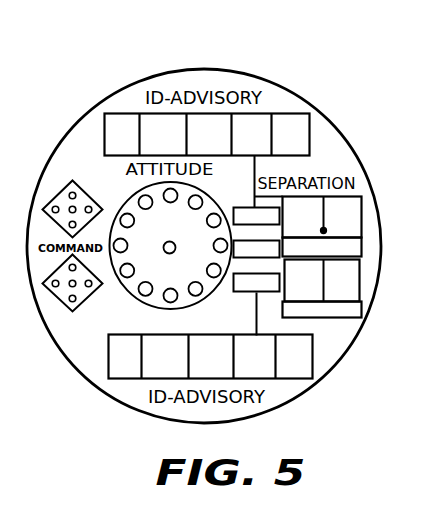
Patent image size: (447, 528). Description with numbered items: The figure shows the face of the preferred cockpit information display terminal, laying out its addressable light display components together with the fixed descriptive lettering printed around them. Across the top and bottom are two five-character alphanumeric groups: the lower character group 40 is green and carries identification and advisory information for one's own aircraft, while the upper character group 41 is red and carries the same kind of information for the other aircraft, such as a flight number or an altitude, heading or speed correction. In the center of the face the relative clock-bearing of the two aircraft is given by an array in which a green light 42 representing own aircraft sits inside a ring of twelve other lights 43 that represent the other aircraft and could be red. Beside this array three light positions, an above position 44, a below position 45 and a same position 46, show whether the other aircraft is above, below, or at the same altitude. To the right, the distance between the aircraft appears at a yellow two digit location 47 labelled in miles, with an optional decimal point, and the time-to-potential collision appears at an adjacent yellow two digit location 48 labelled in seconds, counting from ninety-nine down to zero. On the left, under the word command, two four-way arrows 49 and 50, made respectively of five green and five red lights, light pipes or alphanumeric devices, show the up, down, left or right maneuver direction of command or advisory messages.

The alphanumeric character group 40 is at (311, 358).
The alphanumeric character group 41 is at (307, 125).
The center light 42 is at (166, 250).
The ring of twelve lights 43 is at (146, 205).
The above light position 44 is at (245, 204).
The below light position 45 is at (231, 287).
The same altitude light position 46 is at (244, 236).
The two digit distance location 47 is at (360, 208).
The two digit time location 48 is at (360, 287).
The 4-way arrow 49 is at (84, 293).
The 4-way arrow 50 is at (54, 189).